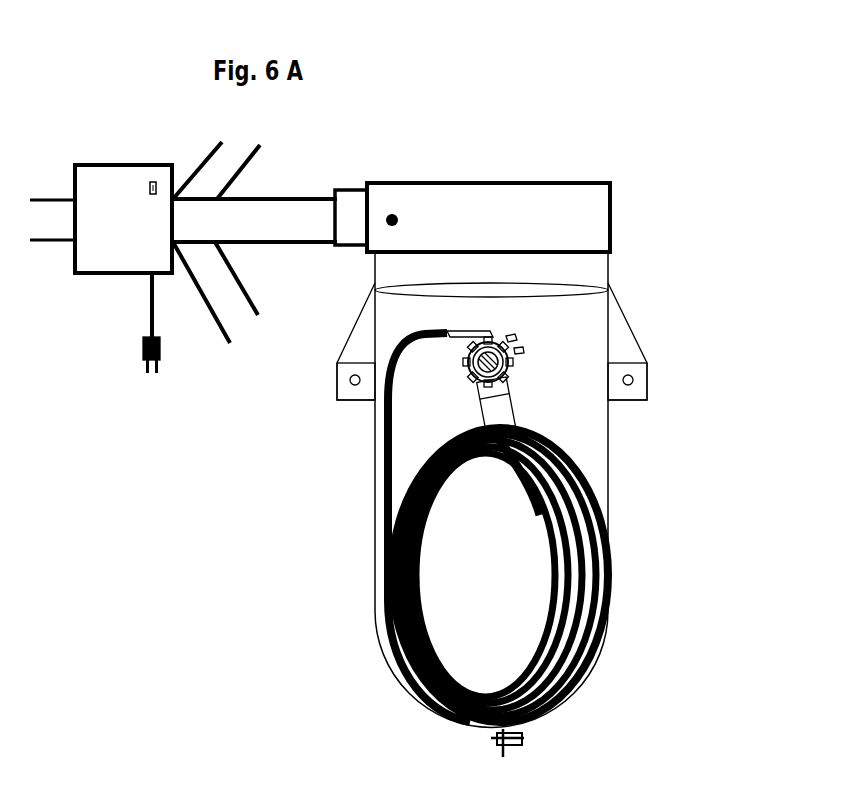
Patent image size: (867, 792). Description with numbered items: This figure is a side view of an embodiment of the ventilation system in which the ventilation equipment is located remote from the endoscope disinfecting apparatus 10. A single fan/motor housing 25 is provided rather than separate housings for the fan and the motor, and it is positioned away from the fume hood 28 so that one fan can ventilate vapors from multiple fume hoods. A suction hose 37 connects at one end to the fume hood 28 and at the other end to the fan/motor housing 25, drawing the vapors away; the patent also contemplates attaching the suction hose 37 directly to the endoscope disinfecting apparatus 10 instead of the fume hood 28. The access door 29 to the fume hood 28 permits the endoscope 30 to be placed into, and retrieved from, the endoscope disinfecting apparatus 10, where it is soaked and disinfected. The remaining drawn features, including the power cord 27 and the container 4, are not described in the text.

The fan/motor housing 25 is at (123, 229).
The power cord with plug 27 is at (147, 308).
The suction hose 37 is at (217, 225).
The fume hood 28 is at (365, 255).
The access door 29 is at (436, 231).
The container / reservoir 4 is at (565, 323).
The endoscope 30 is at (505, 415).
The endoscope disinfecting apparatus 10 is at (722, 545).